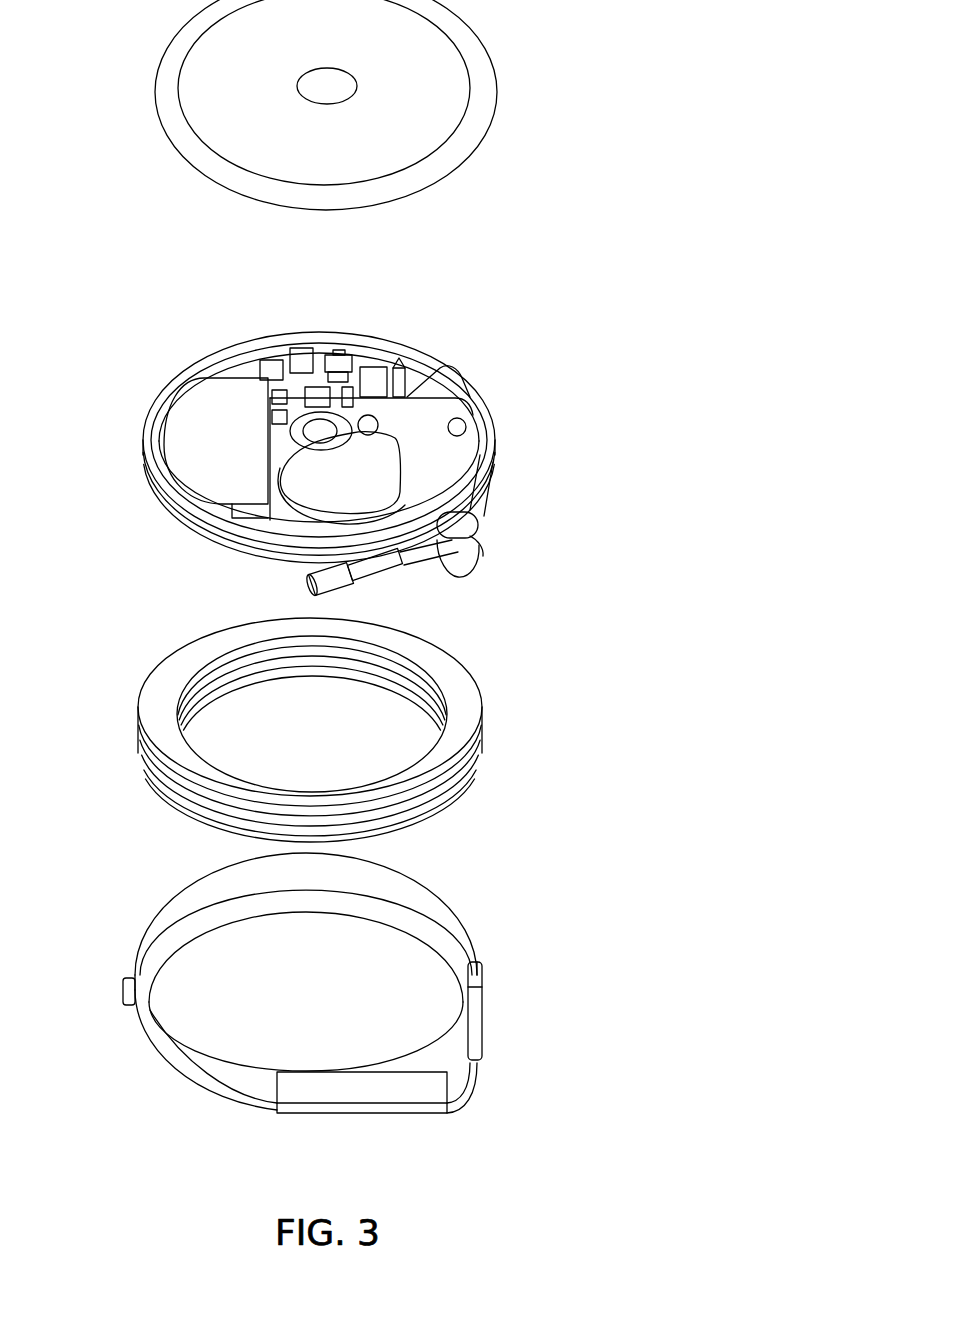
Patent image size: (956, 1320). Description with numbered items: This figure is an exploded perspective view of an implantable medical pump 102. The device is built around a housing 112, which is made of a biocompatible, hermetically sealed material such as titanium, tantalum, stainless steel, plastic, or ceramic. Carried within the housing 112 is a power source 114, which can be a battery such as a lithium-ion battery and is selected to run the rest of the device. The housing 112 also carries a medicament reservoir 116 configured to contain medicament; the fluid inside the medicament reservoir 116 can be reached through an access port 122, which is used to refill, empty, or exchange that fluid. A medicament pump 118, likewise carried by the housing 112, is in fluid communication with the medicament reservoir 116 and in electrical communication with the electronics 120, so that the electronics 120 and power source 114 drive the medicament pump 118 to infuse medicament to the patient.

The implantable medical pump 102 is at (578, 246).
The housing 112 is at (497, 113).
The power source 114 is at (185, 421).
The medicament reservoir 116 is at (465, 718).
The medicament pump 118 is at (322, 492).
The electronics 120 is at (336, 357).
The access port 122 is at (316, 428).